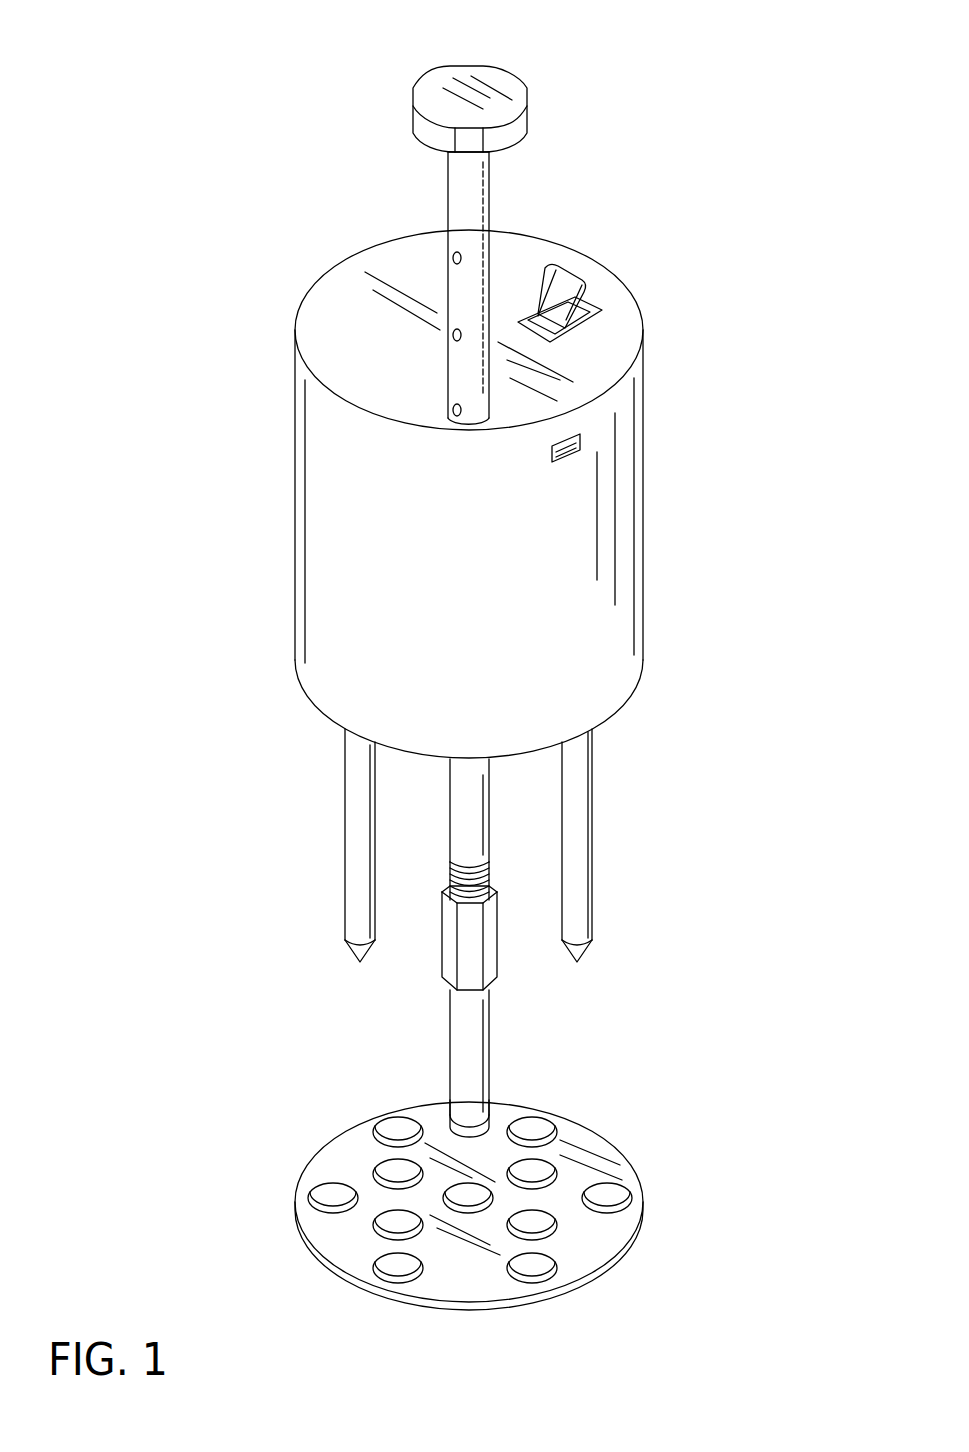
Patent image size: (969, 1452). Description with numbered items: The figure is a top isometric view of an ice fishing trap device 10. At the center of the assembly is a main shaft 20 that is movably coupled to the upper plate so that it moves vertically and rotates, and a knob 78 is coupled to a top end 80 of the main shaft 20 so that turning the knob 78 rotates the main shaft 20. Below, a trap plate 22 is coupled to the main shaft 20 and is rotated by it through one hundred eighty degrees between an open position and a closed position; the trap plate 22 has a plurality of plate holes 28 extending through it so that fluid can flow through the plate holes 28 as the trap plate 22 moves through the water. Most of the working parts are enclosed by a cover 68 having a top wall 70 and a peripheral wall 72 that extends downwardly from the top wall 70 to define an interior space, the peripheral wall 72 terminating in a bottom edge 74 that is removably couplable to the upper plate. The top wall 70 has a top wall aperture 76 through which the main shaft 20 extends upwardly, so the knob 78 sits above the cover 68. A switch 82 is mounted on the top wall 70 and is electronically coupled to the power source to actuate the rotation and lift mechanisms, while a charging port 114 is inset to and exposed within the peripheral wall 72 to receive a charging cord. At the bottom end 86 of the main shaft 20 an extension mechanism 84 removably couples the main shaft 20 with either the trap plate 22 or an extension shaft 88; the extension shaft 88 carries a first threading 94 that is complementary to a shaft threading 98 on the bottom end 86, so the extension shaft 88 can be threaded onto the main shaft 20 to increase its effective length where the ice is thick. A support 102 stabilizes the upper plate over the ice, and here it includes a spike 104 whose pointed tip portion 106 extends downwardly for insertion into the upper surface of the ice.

The ice fishing trap device 10 is at (140, 180).
The main shaft 20 is at (462, 290).
The trap plate 22 is at (335, 1242).
The plate holes 28 is at (537, 1272).
The cover 68 is at (643, 348).
The top wall 70 is at (340, 316).
The peripheral wall 72 is at (330, 502).
The bottom edge 74 is at (308, 700).
The top wall aperture 76 is at (493, 407).
The knob 78 is at (488, 98).
The top end 80 is at (490, 154).
The switch 82 is at (565, 268).
The extension mechanism 84 is at (499, 989).
The bottom end 86 is at (446, 872).
The extension shaft 88 is at (467, 1050).
The first threading 94 is at (493, 1117).
The shaft threading 98 is at (497, 888).
The support 102 is at (641, 819).
The spike 104 is at (355, 828).
The tip portion 106 is at (347, 940).
The charging port 114 is at (572, 455).